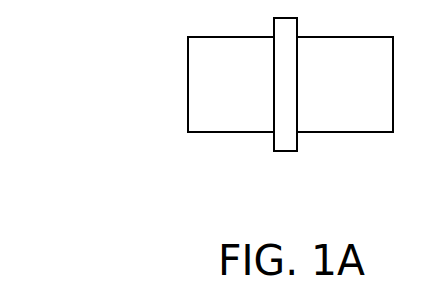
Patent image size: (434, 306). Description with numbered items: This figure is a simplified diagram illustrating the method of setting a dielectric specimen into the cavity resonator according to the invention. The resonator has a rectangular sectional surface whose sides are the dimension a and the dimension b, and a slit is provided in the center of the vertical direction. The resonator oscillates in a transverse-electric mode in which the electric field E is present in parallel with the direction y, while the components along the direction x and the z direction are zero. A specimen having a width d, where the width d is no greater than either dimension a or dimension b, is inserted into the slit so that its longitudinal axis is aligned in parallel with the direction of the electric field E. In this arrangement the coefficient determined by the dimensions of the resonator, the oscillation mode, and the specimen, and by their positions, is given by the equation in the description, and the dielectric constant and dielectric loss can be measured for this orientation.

The rectangular sectional surface dimension a is at (393, 140).
The rectangular sectional surface dimension b is at (178, 35).
The specimen width d is at (238, 88).
The electric field E is at (73, 58).
The x direction x is at (205, 112).
The y direction y is at (205, 112).